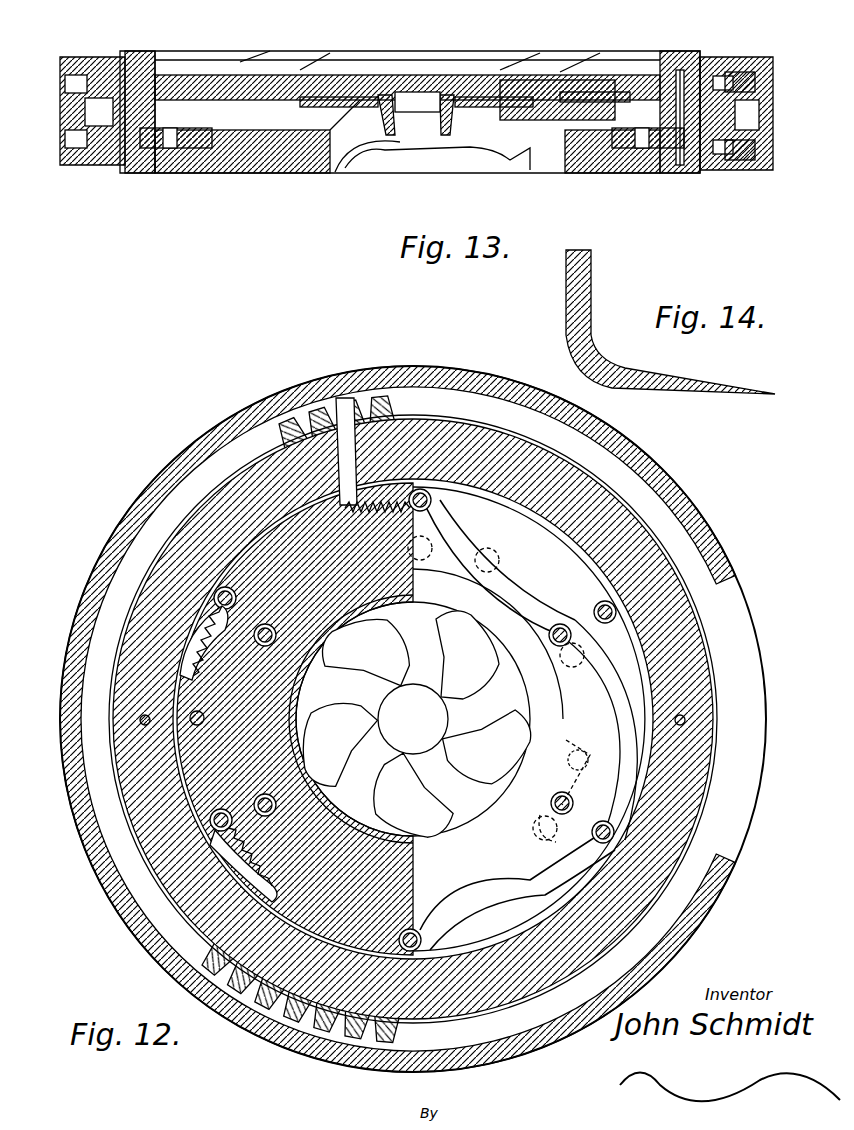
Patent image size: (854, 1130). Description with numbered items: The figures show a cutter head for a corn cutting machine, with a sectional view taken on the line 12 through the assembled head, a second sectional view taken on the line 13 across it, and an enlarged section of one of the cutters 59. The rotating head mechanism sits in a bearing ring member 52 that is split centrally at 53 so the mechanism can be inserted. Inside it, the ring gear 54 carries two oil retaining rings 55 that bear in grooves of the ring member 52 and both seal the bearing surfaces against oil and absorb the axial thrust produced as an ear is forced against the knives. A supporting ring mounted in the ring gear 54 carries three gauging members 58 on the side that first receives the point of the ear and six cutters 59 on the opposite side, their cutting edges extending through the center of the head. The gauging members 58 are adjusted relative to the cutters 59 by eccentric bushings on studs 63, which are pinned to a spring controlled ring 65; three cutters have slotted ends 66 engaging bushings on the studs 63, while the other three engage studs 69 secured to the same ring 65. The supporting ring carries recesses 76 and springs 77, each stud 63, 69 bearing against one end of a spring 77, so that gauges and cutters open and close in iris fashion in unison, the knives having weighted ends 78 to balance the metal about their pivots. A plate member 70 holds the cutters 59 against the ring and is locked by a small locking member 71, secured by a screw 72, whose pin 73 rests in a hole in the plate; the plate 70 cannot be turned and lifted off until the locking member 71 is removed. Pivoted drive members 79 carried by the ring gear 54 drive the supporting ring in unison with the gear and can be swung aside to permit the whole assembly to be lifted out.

In FIG. 13, the section line 12— 12 is at (118, 112).
In FIG. 12, the section line 13— 13 is at (413, 1090).
In FIG. 13, the ring member 52 is at (757, 172).
In FIG. 12, the ring member 52 is at (700, 880).
In FIG. 13, the split 53 is at (380, 112).
In FIG. 12, the split 53 is at (100, 715).
In FIG. 13, the ring gear 54 is at (700, 128).
In FIG. 13, the oil retaining rings 55 is at (735, 80).
In FIG. 13, the gauging members 58 is at (490, 160).
In FIG. 13, the cutters 59 is at (416, 113).
In FIG. 14, the cutters 59 is at (625, 372).
In FIG. 12, the stud 63 is at (255, 628).
In FIG. 13, the spring controlled ring 65 is at (624, 96).
In FIG. 12, the slotted ends 66 is at (605, 604).
In FIG. 12, the studs 69 is at (225, 590).
In FIG. 13, the plate member 70 is at (555, 83).
In FIG. 12, the plate member 70 is at (520, 628).
In FIG. 12, the locking member 71 is at (568, 762).
In FIG. 12, the screw 72 is at (568, 750).
In FIG. 12, the pin 73 is at (535, 835).
In FIG. 12, the recesses 76 is at (345, 505).
In FIG. 12, the springs 77 is at (350, 400).
In FIG. 12, the weighted ends 78 is at (610, 720).
In FIG. 13, the drive members 79 is at (160, 150).